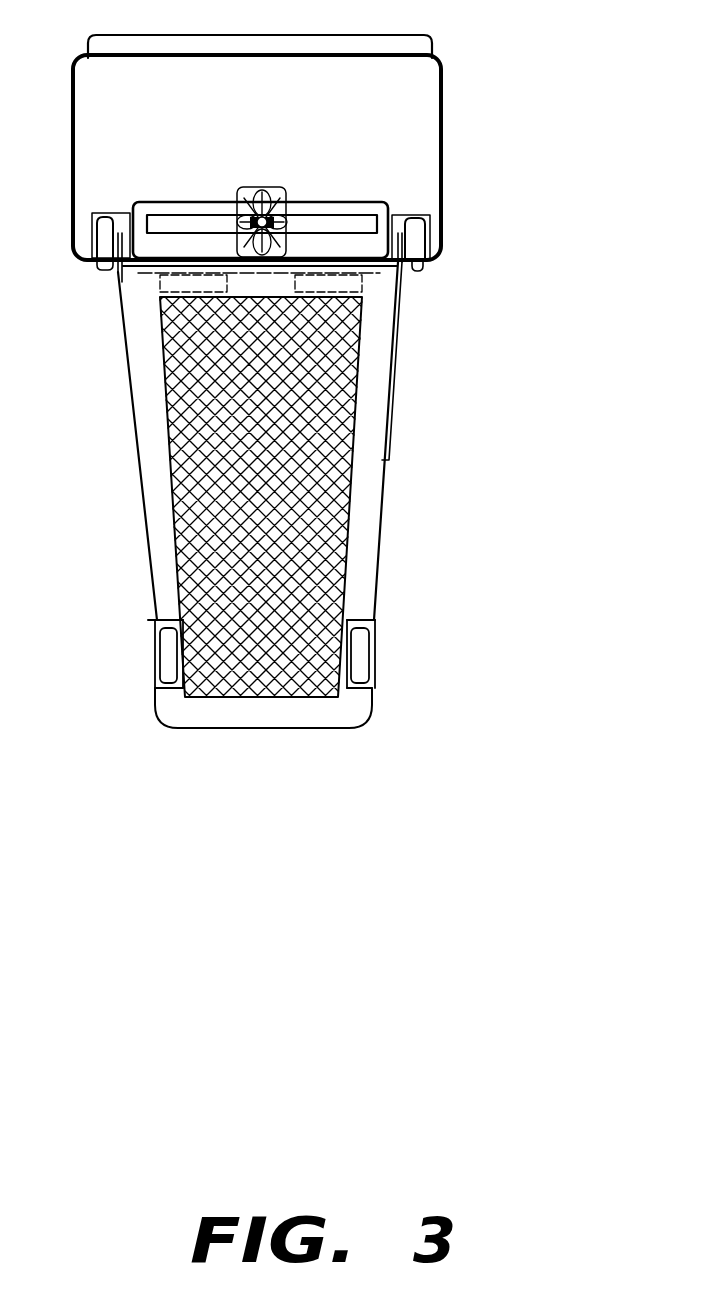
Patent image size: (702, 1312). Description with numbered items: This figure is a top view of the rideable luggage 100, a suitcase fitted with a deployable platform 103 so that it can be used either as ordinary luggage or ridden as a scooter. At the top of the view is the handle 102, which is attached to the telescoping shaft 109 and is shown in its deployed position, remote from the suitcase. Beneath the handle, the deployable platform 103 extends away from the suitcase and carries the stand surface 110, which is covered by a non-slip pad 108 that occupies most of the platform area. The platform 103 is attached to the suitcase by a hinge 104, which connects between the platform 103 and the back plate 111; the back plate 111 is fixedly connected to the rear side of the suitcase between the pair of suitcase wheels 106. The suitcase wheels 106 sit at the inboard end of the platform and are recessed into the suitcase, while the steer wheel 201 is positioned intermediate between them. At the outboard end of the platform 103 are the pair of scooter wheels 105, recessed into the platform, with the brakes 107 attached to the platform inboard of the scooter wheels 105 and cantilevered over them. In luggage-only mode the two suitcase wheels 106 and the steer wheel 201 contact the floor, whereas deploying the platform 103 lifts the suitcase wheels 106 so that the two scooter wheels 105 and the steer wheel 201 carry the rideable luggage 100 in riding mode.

The rideable luggage 100 is at (332, 108).
The steer wheel 201 is at (263, 188).
The telescoping shaft 109 is at (287, 190).
The handle 102 is at (322, 222).
The suitcase wheels 106 is at (413, 263).
The back plate 111 is at (380, 271).
The hinge 104 is at (322, 283).
The non-slip pad 108 is at (308, 448).
The deployable platform 103 is at (378, 502).
The brakes 107 is at (373, 620).
The scooter wheels 105 is at (370, 675).
The stand surface 110 is at (157, 510).